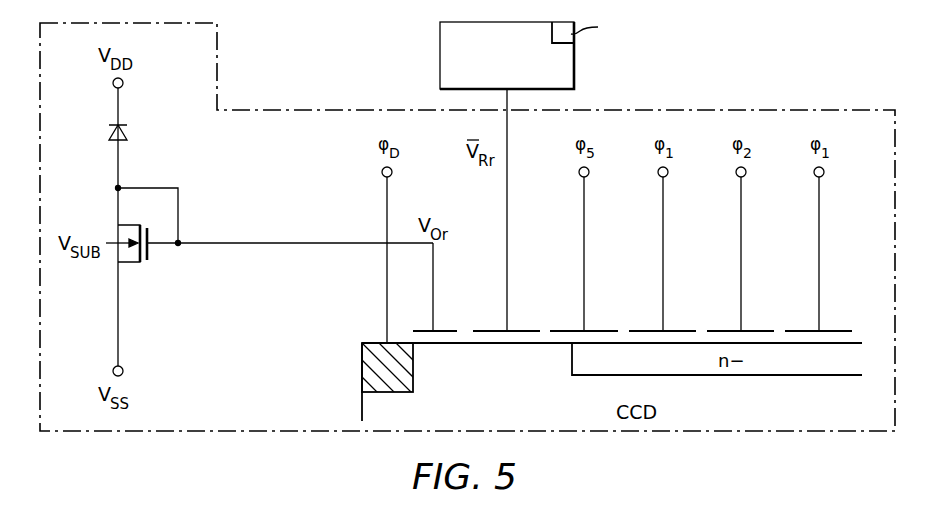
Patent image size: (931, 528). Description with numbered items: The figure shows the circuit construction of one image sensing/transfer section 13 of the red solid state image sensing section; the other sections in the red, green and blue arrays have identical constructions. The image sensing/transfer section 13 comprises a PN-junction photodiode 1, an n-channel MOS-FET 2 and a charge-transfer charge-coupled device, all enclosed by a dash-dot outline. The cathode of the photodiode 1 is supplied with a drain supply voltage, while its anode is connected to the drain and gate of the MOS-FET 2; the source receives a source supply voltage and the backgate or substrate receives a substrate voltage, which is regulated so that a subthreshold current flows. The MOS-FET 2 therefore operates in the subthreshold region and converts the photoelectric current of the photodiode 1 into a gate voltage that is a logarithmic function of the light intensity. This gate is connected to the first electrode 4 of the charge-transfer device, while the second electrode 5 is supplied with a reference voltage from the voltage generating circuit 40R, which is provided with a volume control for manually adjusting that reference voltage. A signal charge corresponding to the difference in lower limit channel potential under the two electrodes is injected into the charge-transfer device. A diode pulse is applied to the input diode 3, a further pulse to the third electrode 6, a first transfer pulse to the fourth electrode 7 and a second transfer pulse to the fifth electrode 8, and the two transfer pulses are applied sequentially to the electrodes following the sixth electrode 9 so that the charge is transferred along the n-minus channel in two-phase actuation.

The PN-junction photodiode 1 is at (112, 129).
The n-channel MOS-FET 2 is at (130, 265).
The input diode 3 is at (368, 362).
The first electrode 4 is at (440, 331).
The second electrode 5 is at (526, 331).
The third electrode 6 is at (604, 331).
The fourth electrode 7 is at (682, 331).
The fifth electrode 8 is at (760, 331).
The sixth electrode 9 is at (838, 331).
The image sensing/transfer section 13 is at (345, 76).
The voltage generating circuit 40R is at (570, 66).